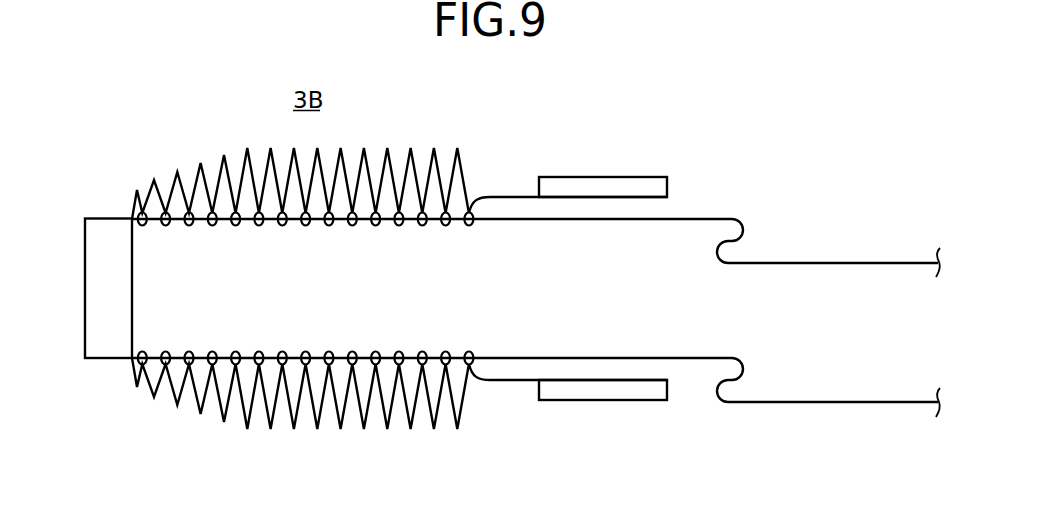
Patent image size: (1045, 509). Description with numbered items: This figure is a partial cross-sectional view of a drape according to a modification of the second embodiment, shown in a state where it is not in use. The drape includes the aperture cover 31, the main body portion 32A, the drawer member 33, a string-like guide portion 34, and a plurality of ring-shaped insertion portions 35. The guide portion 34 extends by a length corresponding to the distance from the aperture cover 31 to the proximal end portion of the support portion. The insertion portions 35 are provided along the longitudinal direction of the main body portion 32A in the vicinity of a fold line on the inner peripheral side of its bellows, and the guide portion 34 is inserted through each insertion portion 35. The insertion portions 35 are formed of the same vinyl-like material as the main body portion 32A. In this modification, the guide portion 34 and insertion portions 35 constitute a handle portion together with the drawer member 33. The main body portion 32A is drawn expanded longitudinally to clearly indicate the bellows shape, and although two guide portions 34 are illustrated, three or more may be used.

The aperture cover 31 is at (93, 288).
The main body portion 32A is at (368, 412).
The drawer member 33 is at (602, 188).
The guide portion 34 is at (573, 220).
The insertion portion 35 is at (190, 225).